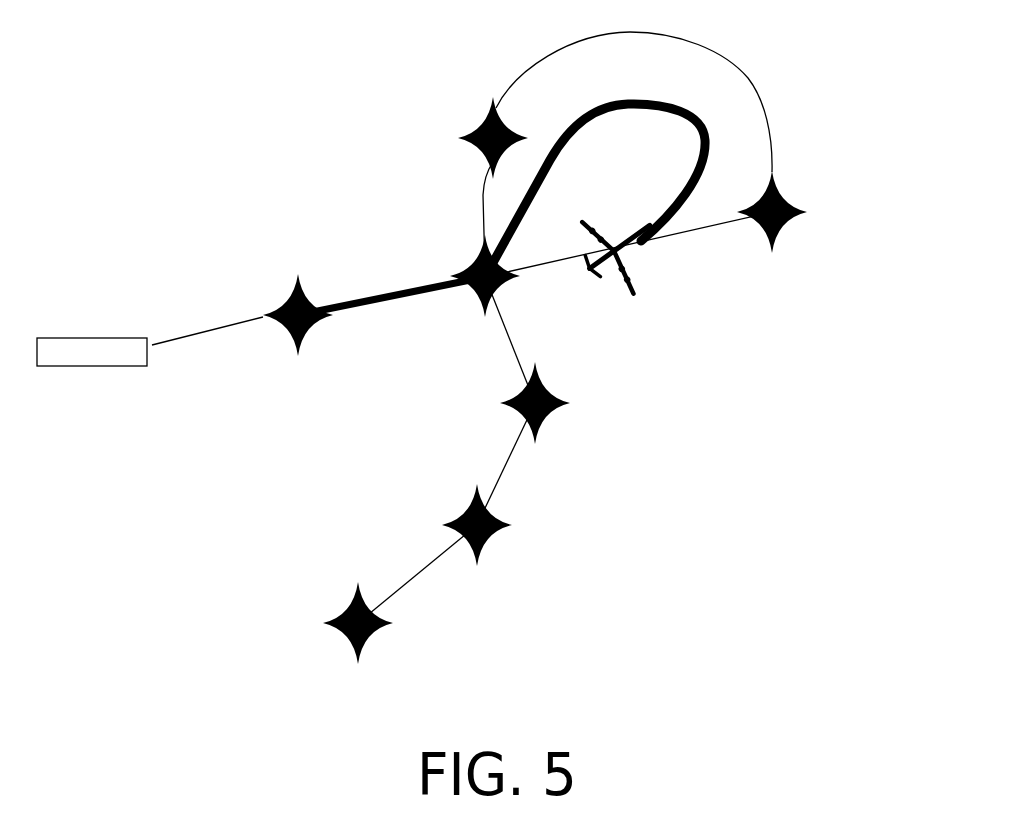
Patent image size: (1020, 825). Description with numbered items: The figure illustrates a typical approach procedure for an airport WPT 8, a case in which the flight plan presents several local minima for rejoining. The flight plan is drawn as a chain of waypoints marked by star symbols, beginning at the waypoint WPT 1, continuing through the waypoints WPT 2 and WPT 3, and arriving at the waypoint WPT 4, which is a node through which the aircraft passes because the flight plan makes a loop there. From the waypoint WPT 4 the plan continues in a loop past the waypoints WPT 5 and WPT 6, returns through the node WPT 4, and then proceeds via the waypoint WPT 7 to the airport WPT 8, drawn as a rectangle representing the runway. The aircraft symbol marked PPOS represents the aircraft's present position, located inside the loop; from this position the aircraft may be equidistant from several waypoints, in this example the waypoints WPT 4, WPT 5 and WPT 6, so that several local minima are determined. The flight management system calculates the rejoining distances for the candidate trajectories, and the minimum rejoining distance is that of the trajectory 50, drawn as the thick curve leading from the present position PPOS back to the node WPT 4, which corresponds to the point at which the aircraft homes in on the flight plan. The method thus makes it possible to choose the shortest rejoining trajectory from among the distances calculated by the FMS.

The trajectory 50 is at (697, 110).
The waypoint WPT1 1 is at (367, 647).
The waypoint WPT2 2 is at (508, 541).
The waypoint WPT3 3 is at (586, 403).
The waypoint WPT4 4 is at (445, 273).
The waypoint WPT5 5 is at (456, 138).
The waypoint WPT6 6 is at (815, 212).
The waypoint WPT7 7 is at (259, 302).
The airport WPT8 8 is at (77, 382).
The present position PPOS is at (652, 258).